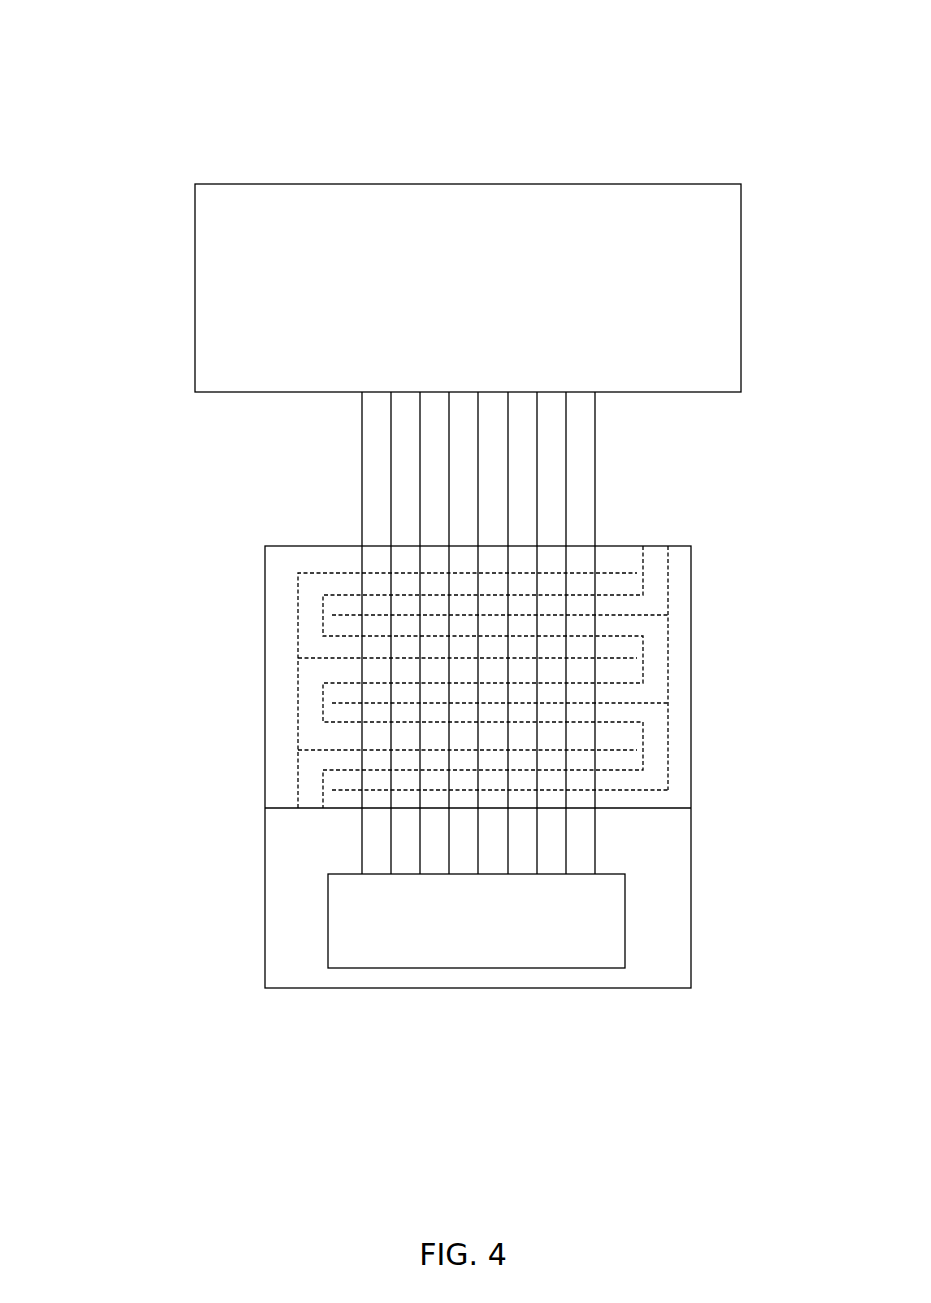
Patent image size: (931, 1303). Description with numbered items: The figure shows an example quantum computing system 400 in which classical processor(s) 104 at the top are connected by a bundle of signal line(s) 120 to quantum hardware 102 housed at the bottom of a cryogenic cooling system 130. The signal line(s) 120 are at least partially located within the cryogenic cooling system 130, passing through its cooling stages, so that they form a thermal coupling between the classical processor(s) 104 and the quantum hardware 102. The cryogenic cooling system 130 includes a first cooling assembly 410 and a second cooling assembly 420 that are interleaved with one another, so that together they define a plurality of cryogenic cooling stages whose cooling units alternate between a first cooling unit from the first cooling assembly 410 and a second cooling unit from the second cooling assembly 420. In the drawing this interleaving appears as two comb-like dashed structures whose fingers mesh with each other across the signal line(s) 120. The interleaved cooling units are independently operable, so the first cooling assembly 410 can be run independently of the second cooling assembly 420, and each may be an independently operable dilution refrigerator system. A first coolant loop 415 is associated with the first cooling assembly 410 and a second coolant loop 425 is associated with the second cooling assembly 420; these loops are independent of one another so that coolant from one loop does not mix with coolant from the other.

The quantum computing system 400 is at (278, 100).
The classical processor(s) 104 is at (631, 184).
The signal line(s) 120 is at (362, 460).
The cryogenic cooling system 130 is at (188, 698).
The first cooling assembly 410 is at (265, 580).
The first coolant loop 415 is at (298, 632).
The second cooling assembly 420 is at (692, 583).
The second coolant loop 425 is at (668, 688).
The quantum hardware 102 is at (626, 915).